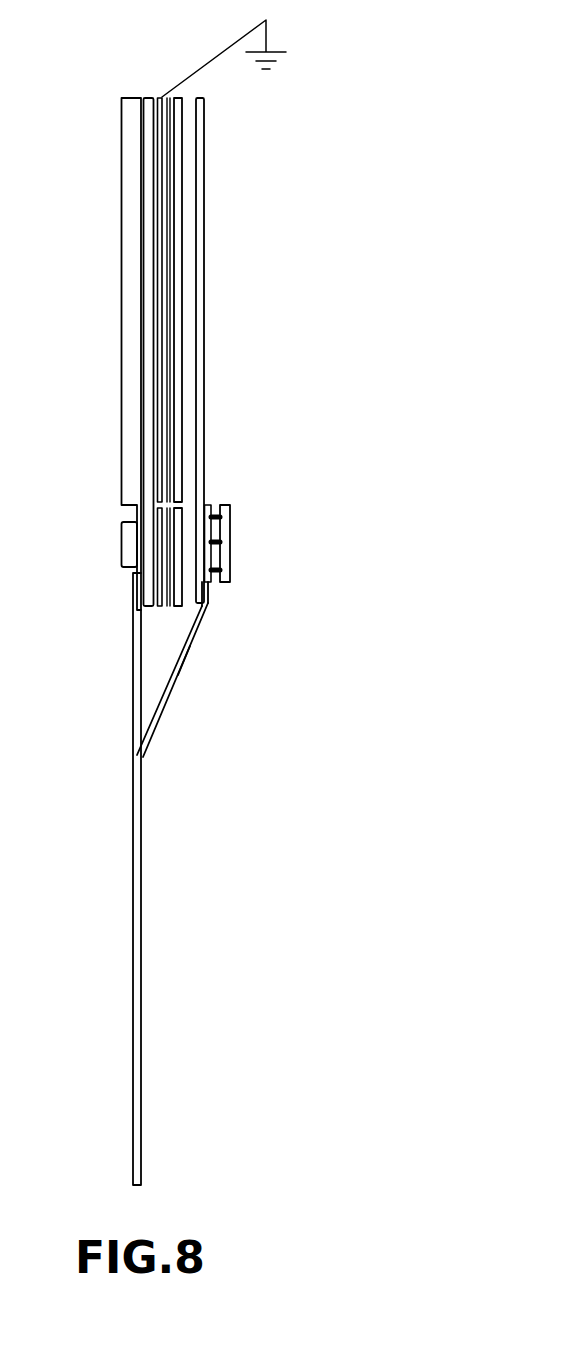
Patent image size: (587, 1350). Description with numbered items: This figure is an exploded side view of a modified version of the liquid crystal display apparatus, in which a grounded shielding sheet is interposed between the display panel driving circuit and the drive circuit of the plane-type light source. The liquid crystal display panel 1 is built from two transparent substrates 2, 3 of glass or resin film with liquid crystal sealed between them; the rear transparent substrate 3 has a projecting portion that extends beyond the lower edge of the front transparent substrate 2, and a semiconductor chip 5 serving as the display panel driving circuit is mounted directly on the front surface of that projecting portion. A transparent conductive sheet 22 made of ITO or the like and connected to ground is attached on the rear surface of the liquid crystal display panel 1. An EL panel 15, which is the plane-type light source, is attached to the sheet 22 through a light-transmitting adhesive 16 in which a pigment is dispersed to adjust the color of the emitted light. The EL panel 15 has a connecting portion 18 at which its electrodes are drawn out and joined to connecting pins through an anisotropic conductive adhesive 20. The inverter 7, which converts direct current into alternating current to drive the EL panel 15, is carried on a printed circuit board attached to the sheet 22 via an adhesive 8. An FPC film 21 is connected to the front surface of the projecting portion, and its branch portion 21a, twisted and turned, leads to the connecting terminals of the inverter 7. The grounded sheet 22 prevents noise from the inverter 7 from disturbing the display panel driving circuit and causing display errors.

The liquid crystal display panel 1 is at (125, 326).
The transparent substrate 2 is at (131, 108).
The transparent substrate 3 is at (148, 106).
The semiconductor chip 5 is at (130, 548).
The inverter 7 is at (208, 603).
The adhesive 8 is at (184, 648).
The EL panel 15 is at (210, 140).
The adhesive 16 is at (178, 216).
The connecting portion 18 is at (232, 554).
The anisotropic conductive adhesive 20 is at (208, 508).
The FPC film 21 is at (143, 917).
The branch portion 21a is at (170, 688).
The transparent conductive sheet 22 is at (160, 609).